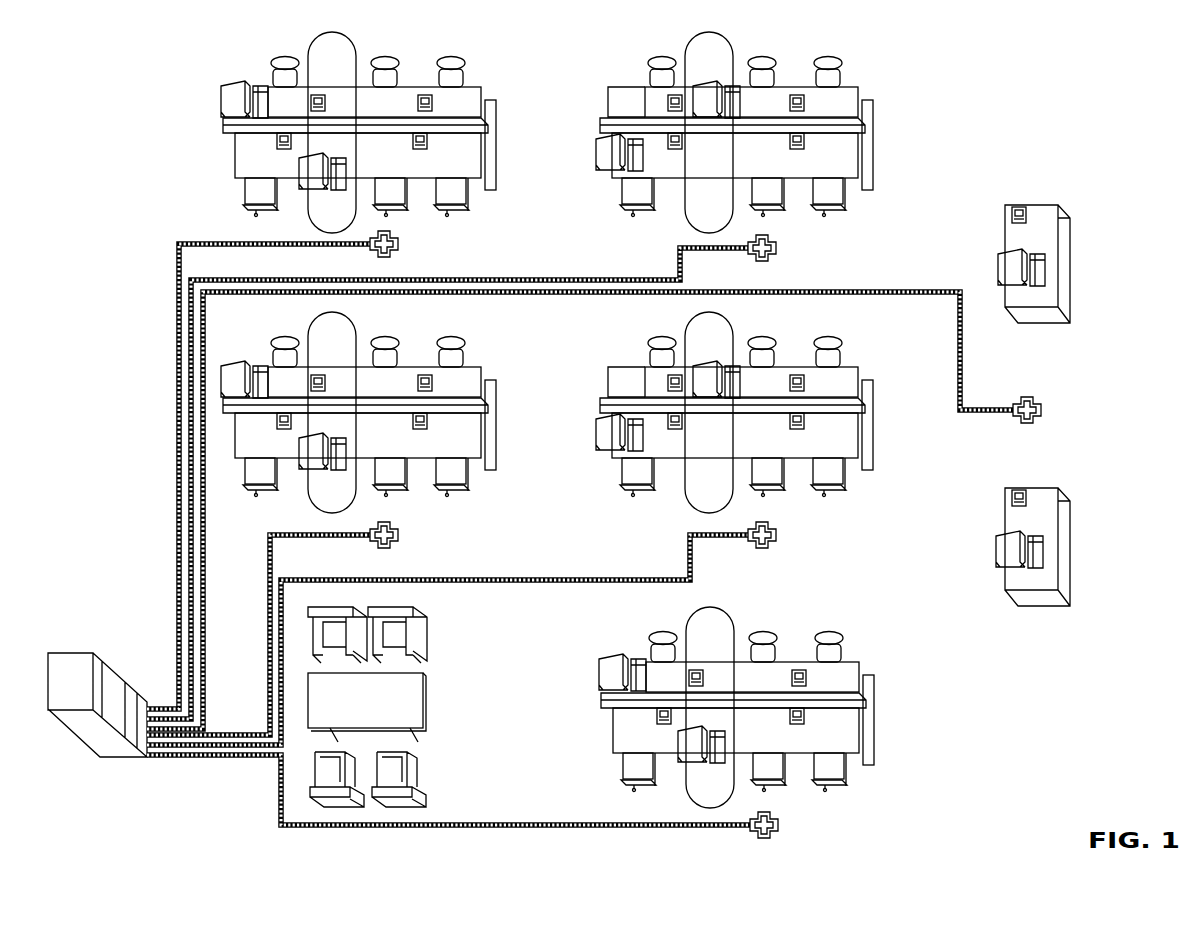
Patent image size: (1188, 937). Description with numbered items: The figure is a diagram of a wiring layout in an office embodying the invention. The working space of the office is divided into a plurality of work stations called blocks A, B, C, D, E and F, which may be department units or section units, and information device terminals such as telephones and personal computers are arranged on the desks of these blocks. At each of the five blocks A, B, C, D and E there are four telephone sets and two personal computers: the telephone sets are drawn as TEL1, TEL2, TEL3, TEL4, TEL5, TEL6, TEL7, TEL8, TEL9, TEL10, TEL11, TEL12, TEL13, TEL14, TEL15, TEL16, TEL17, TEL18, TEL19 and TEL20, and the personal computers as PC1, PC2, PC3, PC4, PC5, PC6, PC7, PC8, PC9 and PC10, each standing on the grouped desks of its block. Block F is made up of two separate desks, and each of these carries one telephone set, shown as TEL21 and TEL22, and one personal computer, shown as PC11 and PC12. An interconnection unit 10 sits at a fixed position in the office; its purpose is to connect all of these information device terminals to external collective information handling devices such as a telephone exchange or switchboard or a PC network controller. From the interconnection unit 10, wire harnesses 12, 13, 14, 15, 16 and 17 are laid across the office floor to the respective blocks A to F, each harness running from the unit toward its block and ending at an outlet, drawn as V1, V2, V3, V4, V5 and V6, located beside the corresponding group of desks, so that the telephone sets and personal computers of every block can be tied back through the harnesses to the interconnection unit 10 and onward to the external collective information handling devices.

The interconnection unit 10 is at (103, 738).
The wire harness 12 is at (502, 276).
The wire harness 13 is at (180, 238).
The wire harness 14 is at (520, 576).
The wire harness 15 is at (266, 594).
The wire harness 16 is at (486, 822).
The wire harness 17 is at (965, 380).
The block A is at (914, 136).
The block B is at (519, 110).
The block C is at (897, 394).
The block D is at (525, 408).
The block E is at (892, 660).
The block F is at (1097, 301).
The network outlet V1 is at (775, 248).
The network outlet V2 is at (397, 244).
The network outlet V3 is at (775, 535).
The network outlet V4 is at (397, 535).
The network outlet V5 is at (777, 825).
The network outlet V6 is at (1040, 410).
The personal computer PC1 is at (716, 84).
The personal computer PC2 is at (595, 140).
The personal computer PC3 is at (232, 80).
The personal computer PC4 is at (318, 190).
The personal computer PC5 is at (716, 364).
The personal computer PC6 is at (596, 438).
The personal computer PC7 is at (230, 360).
The personal computer PC8 is at (318, 470).
The personal computer PC9 is at (598, 661).
The personal computer PC10 is at (704, 756).
The personal computer PC11 is at (997, 263).
The personal computer PC12 is at (995, 545).
The telephone set TEL1 is at (800, 93).
The telephone set TEL2 is at (798, 148).
The telephone set TEL3 is at (668, 96).
The telephone set TEL4 is at (684, 142).
The telephone set TEL5 is at (446, 106).
The telephone set TEL6 is at (420, 145).
The telephone set TEL7 is at (326, 100).
The telephone set TEL8 is at (276, 140).
The telephone set TEL9 is at (798, 374).
The telephone set TEL10 is at (798, 428).
The telephone set TEL11 is at (668, 376).
The telephone set TEL12 is at (684, 422).
The telephone set TEL13 is at (420, 372).
The telephone set TEL14 is at (455, 430).
The telephone set TEL15 is at (320, 374).
The telephone set TEL16 is at (278, 420).
The telephone set TEL17 is at (800, 668).
The telephone set TEL18 is at (798, 720).
The telephone set TEL19 is at (708, 666).
The telephone set TEL20 is at (656, 716).
The telephone set TEL21 is at (1018, 205).
The telephone set TEL22 is at (1018, 490).